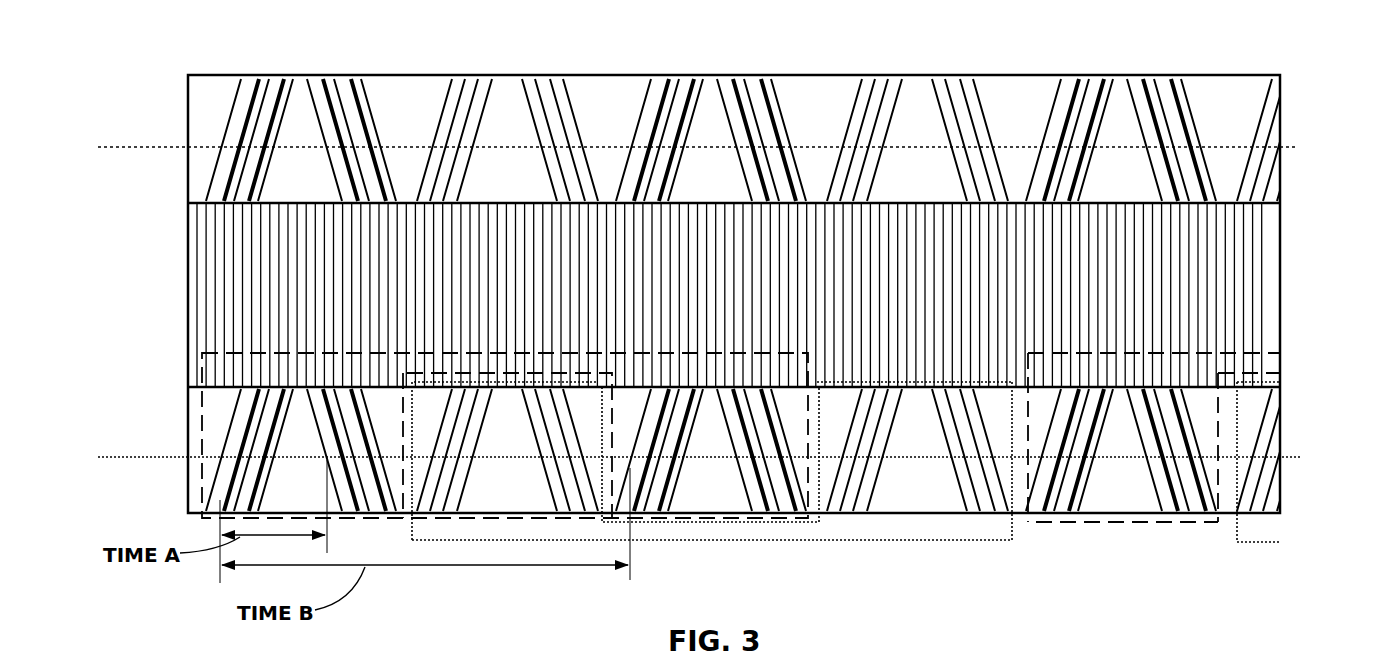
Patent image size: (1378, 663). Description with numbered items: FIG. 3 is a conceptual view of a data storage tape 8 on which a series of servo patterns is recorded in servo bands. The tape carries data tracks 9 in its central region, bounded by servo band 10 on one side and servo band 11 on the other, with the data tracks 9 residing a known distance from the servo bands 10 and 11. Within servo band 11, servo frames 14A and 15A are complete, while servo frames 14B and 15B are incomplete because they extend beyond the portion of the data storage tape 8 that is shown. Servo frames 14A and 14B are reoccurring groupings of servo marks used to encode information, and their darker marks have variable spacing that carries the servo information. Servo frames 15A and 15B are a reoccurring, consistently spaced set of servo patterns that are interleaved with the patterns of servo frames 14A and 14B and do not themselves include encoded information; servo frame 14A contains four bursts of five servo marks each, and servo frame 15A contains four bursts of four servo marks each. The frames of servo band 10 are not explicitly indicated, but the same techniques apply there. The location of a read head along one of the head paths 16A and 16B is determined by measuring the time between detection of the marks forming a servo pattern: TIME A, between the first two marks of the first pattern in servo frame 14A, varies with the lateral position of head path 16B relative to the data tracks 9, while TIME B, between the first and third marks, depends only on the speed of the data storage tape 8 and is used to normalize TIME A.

The data storage tape 8 is at (1317, 87).
The data tracks 9 is at (133, 291).
The servo band 10 is at (118, 121).
The servo band 11 is at (126, 418).
The servo frame 14A is at (517, 350).
The servo frame 14B is at (1158, 523).
The servo frame 15A is at (975, 542).
The servo frame 15B is at (1272, 546).
The head path 16A is at (1300, 147).
The head path 16B is at (1298, 458).